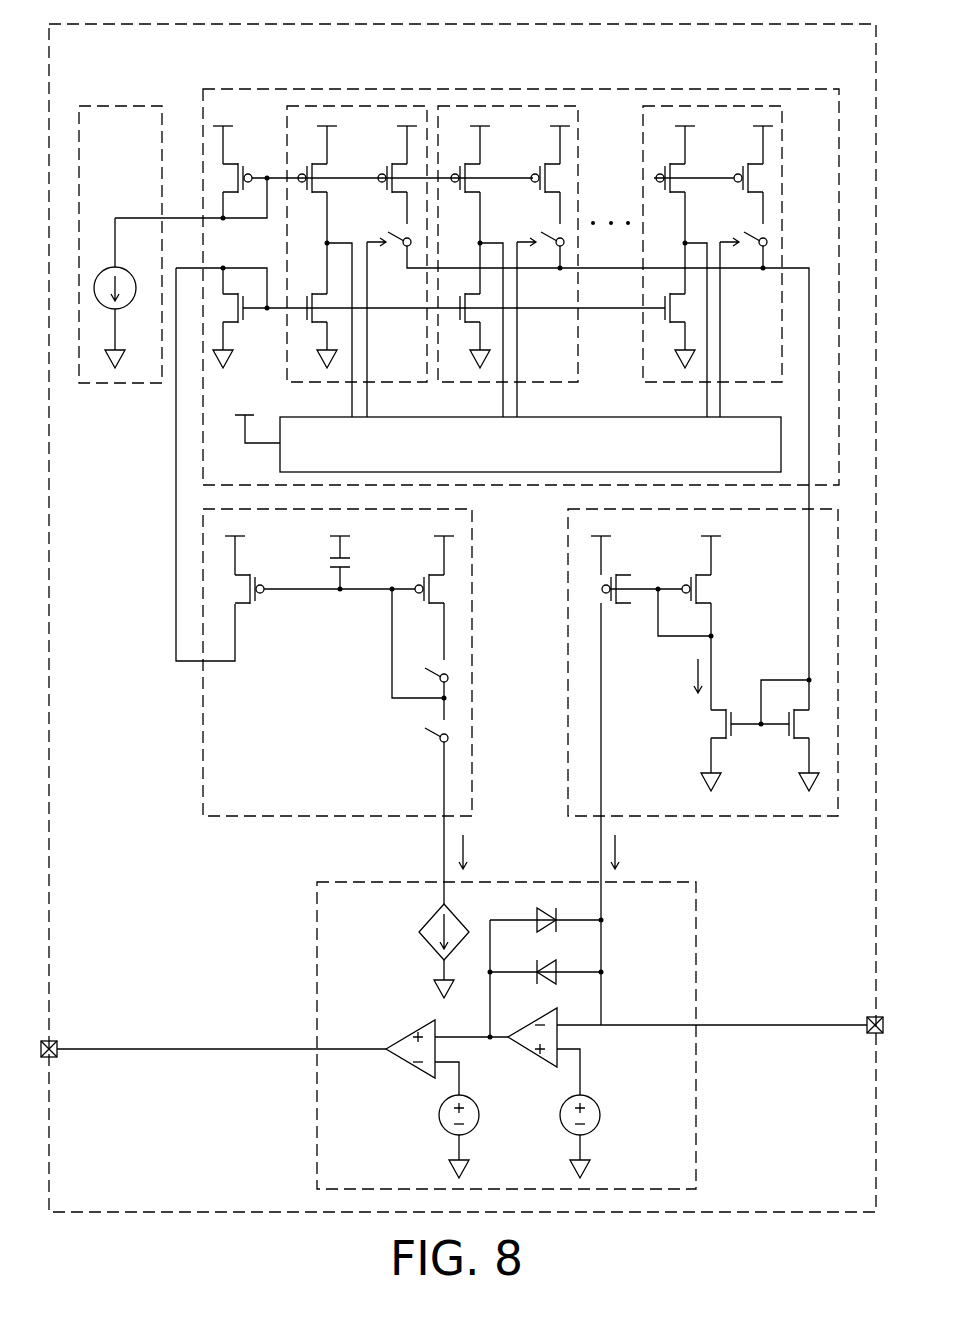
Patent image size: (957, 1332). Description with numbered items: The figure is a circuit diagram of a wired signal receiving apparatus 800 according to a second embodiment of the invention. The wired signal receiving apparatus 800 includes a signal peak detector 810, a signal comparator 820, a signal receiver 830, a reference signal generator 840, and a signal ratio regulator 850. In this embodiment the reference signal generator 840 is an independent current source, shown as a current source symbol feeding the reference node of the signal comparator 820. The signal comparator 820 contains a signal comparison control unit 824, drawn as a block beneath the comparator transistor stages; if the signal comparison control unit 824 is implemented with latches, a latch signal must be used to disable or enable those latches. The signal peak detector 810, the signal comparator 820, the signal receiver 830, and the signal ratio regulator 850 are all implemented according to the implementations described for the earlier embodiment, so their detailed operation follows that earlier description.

The wired signal receiving apparatus 800 is at (527, 22).
The signal comparator 820 is at (527, 87).
The signal comparison control unit 824 is at (571, 417).
The reference signal generator 840 is at (112, 106).
The signal peak detector 810 is at (330, 817).
The signal ratio regulator 850 is at (784, 816).
The signal receiver 830 is at (696, 967).